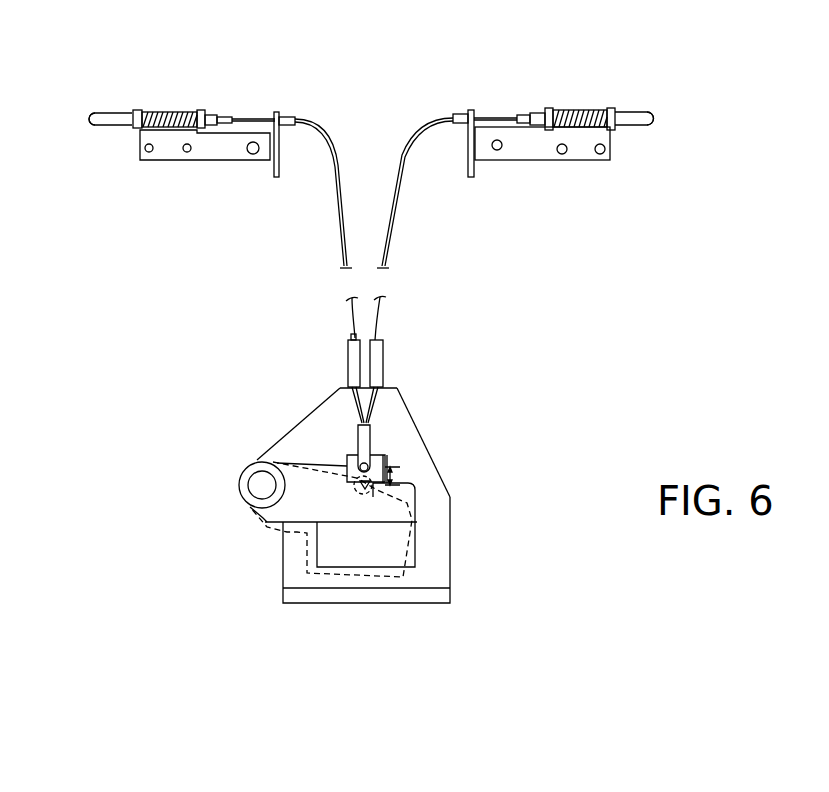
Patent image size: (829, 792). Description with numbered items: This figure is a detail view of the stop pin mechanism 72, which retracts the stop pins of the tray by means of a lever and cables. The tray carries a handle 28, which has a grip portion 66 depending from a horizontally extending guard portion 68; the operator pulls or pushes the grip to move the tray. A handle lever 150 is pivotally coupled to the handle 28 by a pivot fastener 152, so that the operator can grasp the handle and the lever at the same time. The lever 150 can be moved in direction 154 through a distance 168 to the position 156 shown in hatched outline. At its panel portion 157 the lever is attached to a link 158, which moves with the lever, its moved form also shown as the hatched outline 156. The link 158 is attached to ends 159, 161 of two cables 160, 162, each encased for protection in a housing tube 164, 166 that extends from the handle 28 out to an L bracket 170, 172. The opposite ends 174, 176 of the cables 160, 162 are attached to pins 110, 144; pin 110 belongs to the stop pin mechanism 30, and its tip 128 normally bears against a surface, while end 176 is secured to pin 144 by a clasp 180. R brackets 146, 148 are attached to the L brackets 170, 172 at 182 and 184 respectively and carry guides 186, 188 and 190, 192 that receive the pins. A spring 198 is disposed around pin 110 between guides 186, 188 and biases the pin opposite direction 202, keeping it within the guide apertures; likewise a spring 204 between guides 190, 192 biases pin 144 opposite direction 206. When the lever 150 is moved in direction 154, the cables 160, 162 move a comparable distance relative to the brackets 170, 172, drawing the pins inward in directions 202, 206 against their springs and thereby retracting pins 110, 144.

The handle 28 is at (508, 590).
The stop pin mechanism 30 is at (234, 85).
The grip portion 66 is at (432, 603).
The guard portion 68 is at (442, 545).
The stop pin mechanism 72 is at (460, 350).
The pin 110 is at (107, 115).
The tip 128 is at (91, 133).
The pin 144 is at (643, 127).
The R bracket 146 is at (231, 156).
The R bracket 148 is at (592, 145).
The handle lever 150 is at (408, 495).
The pivot fastener 152 is at (250, 485).
The direction 154 is at (323, 478).
The position 156 is at (347, 580).
The panel portion 157 is at (330, 447).
The link 158 is at (368, 441).
The end of cable 159 is at (352, 415).
The cable 160 is at (332, 137).
The end of cable 161 is at (397, 392).
The cable 162 is at (423, 118).
The housing tube 164 is at (348, 363).
The housing tube 166 is at (383, 360).
The distance 168 is at (388, 470).
The L bracket 170 is at (280, 148).
The L bracket 172 is at (470, 163).
The end of cable 174 is at (230, 117).
The end of cable 176 is at (517, 115).
The clasp 180 is at (527, 115).
The attachment location 182 is at (253, 141).
The attachment location 184 is at (497, 140).
The guide 186 is at (137, 110).
The guide 188 is at (203, 110).
The guide 190 is at (550, 108).
The guide 192 is at (627, 113).
The spring 198 is at (165, 131).
The direction 202 is at (183, 83).
The spring 204 is at (610, 120).
The direction 206 is at (607, 82).